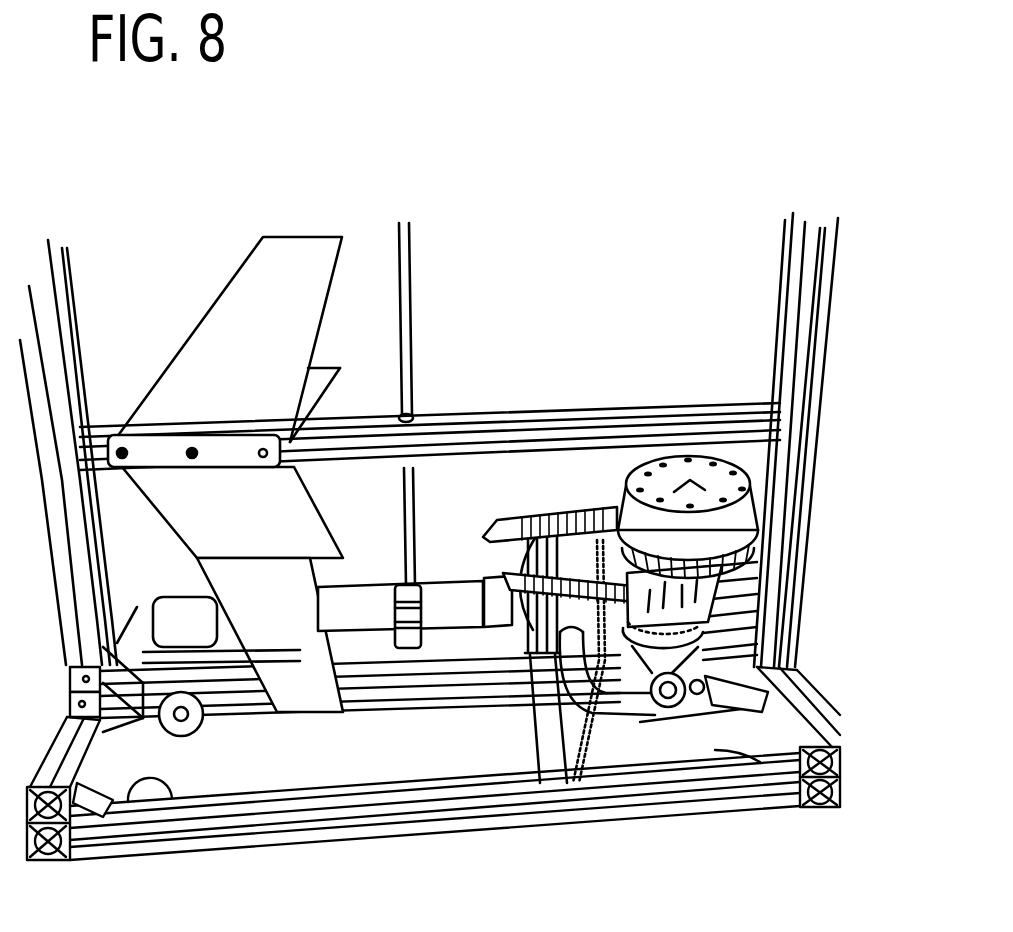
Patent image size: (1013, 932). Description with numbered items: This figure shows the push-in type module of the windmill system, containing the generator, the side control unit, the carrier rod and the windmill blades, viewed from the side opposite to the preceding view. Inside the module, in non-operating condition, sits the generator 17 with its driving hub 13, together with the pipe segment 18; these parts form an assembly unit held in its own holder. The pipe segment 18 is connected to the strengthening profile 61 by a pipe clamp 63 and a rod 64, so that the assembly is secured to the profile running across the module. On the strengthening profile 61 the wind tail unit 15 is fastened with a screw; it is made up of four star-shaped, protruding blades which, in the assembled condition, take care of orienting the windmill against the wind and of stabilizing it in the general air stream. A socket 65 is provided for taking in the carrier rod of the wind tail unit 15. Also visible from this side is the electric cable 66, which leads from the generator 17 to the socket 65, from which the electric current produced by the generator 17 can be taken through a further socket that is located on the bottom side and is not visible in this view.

The driving hub 13 is at (745, 483).
The wind tail unit 15 is at (287, 652).
The generator 17 is at (710, 588).
The pipe segment 18 is at (358, 615).
The strengthening profile 61 is at (530, 433).
The pipe clamp 63 is at (405, 648).
The rod 64 is at (413, 545).
The socket 65 is at (533, 703).
The electric cable 66 is at (615, 733).